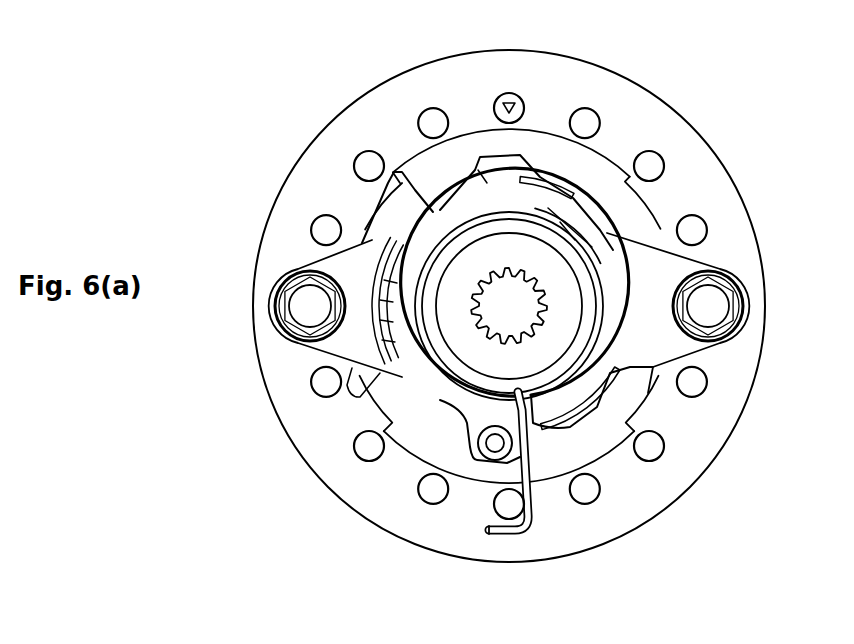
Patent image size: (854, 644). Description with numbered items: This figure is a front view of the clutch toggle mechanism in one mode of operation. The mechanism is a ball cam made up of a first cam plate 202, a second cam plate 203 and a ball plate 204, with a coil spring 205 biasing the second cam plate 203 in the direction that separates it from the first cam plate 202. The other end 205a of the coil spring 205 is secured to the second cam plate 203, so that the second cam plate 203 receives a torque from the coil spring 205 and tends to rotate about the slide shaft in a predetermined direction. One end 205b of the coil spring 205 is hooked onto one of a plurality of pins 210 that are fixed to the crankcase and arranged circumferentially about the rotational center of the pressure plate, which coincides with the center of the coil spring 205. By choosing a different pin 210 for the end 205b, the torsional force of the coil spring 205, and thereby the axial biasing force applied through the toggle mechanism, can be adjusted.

The first cam plate 202 is at (385, 368).
The second cam plate 203 is at (435, 213).
The ball plate 204 is at (577, 183).
The coil spring 205 is at (607, 297).
The other end of the coil spring 205a is at (485, 441).
The one end of the coil spring 205b is at (512, 534).
The pin 210 is at (421, 499).